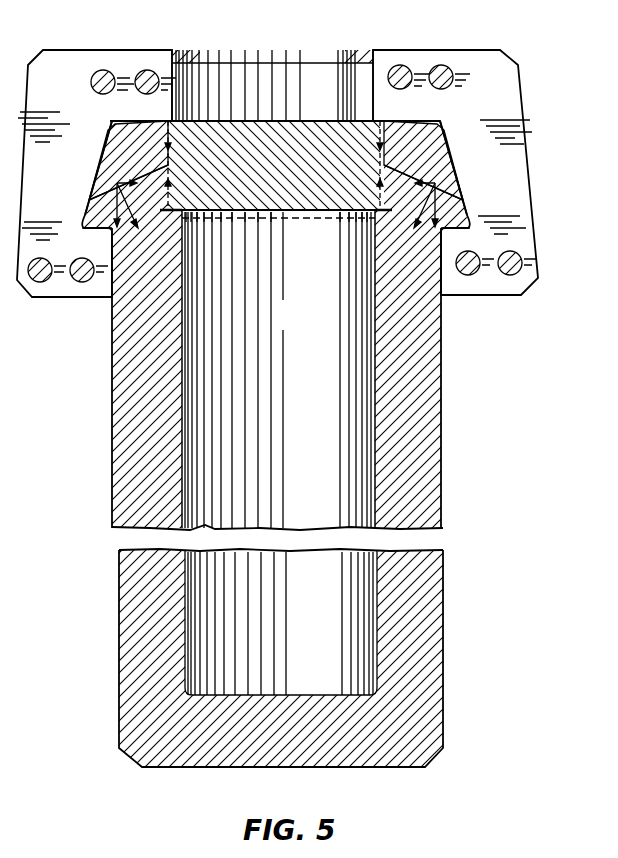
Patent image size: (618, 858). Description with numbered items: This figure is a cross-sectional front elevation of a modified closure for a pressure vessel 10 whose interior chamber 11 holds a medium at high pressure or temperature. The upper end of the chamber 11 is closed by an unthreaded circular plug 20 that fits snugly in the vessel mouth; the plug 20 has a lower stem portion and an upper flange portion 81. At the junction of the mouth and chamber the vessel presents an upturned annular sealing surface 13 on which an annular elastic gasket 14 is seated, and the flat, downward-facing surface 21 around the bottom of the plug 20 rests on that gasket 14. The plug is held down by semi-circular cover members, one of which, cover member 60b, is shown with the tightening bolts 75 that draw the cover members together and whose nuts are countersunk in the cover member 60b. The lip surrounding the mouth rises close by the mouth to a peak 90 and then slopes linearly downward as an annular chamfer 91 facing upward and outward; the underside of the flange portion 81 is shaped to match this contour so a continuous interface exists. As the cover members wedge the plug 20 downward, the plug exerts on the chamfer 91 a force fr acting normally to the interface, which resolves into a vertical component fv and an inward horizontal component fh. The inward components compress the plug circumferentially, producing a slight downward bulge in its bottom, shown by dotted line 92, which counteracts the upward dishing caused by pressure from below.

The pressure vessel 10 is at (312, 748).
The interior chamber 11 is at (296, 376).
The annular sealing surface 13 is at (177, 214).
The annular elastic gasket 14 is at (152, 226).
The circular plug 20 is at (274, 130).
The downward-facing surface 21 is at (173, 208).
The cover member 60b is at (297, 173).
The tightening bolt 75 is at (106, 72).
The flange portion 81 is at (104, 152).
The peak 90 is at (151, 168).
The annular chamfer 91 is at (103, 195).
The dotted line 92 is at (295, 222).
The horizontal force component fh is at (117, 183).
The vertical force component fv is at (80, 210).
The resultant force fr is at (136, 231).